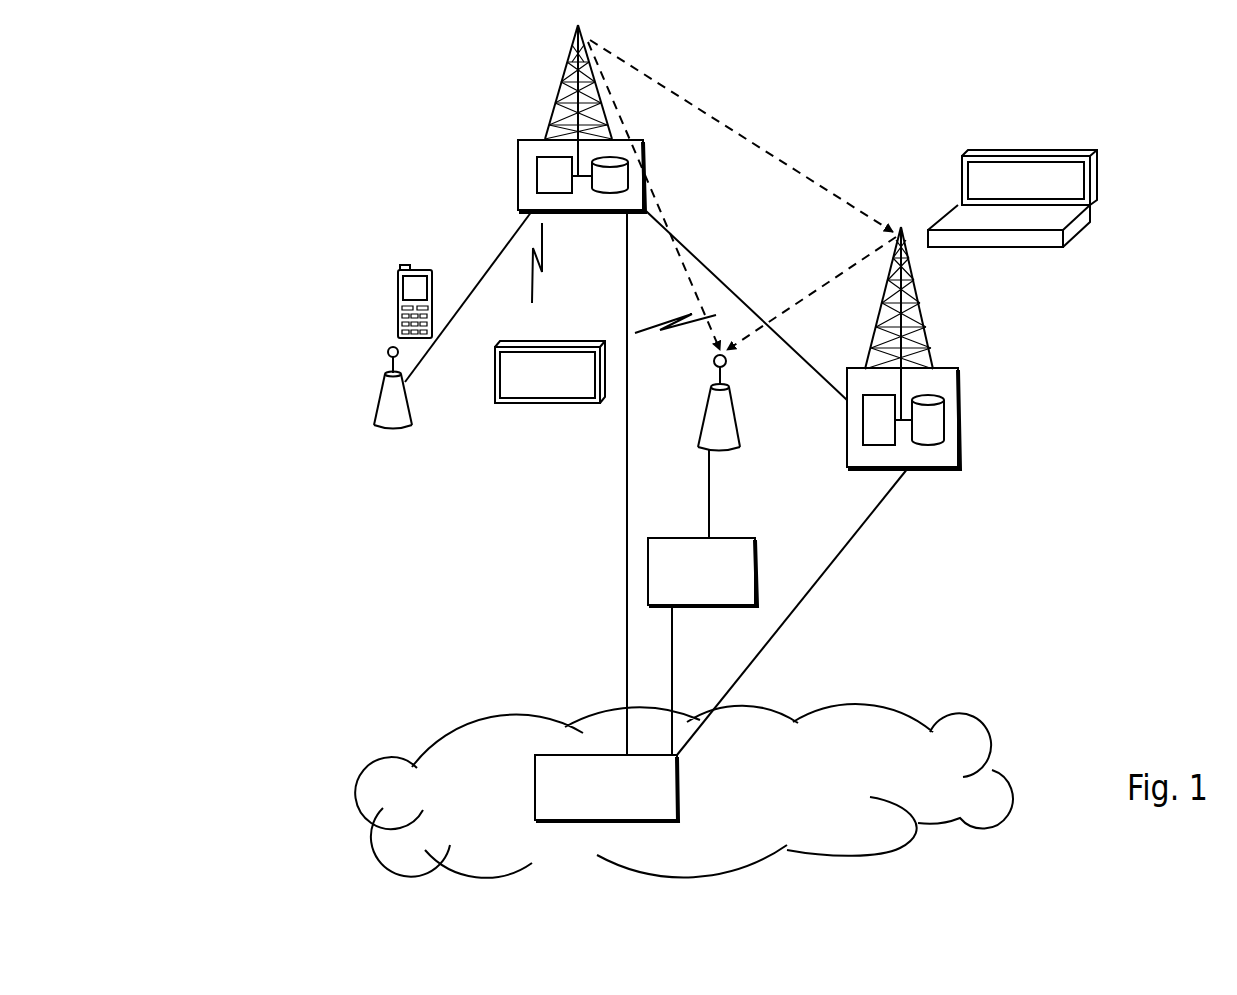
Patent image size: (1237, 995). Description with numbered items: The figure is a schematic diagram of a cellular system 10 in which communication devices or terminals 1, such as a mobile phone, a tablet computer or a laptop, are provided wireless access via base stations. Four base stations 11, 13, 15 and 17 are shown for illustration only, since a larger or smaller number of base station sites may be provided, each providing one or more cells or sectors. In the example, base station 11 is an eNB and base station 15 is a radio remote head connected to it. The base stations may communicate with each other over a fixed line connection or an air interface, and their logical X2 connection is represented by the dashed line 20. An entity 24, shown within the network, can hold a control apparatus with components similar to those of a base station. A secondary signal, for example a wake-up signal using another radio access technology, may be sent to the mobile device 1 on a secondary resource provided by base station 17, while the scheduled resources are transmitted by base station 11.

The wireless communication system 10 is at (287, 133).
The base station 11 is at (518, 160).
The base station 13 is at (950, 468).
The base station 15 is at (380, 385).
The base station 17 is at (722, 425).
The dashed line 20 is at (682, 100).
The entity 24 is at (550, 770).
The communication device 1 is at (420, 282).